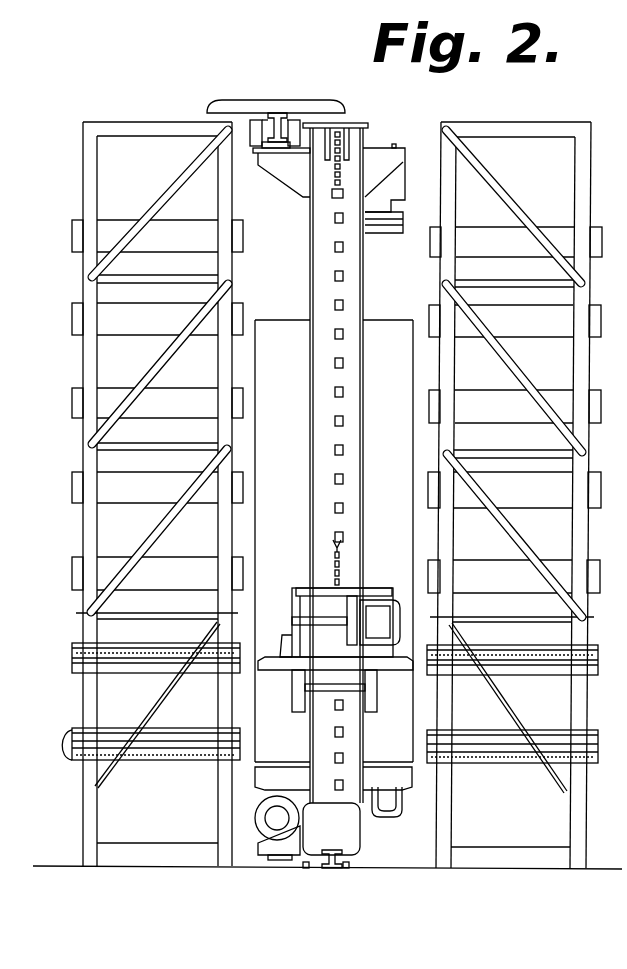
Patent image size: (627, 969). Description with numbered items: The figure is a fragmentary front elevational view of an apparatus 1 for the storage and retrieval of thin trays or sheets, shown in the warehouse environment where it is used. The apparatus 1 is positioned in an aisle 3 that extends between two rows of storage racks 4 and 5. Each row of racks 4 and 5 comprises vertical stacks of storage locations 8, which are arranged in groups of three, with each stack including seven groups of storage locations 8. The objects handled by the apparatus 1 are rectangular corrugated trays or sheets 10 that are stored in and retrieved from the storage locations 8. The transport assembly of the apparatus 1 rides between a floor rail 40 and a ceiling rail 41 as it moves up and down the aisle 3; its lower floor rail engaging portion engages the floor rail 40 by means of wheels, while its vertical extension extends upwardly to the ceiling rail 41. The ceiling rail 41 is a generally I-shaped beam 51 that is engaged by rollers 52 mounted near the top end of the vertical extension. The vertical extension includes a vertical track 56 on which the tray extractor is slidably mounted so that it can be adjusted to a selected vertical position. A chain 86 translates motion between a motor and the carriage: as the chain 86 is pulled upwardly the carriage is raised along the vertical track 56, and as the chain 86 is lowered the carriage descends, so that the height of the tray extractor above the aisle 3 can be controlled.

The apparatus 1 is at (380, 122).
The aisle 3 is at (415, 867).
The storage rack row 4 is at (82, 193).
The storage rack row 5 is at (591, 214).
The storage location 8 is at (72, 648).
The tray 10 is at (137, 660).
The floor rail 40 is at (350, 868).
The ceiling rail 41 is at (263, 118).
The I-shaped beam 51 is at (294, 118).
The rollers 52 is at (254, 100).
The vertical track 56 is at (366, 285).
The chain 86 is at (345, 583).